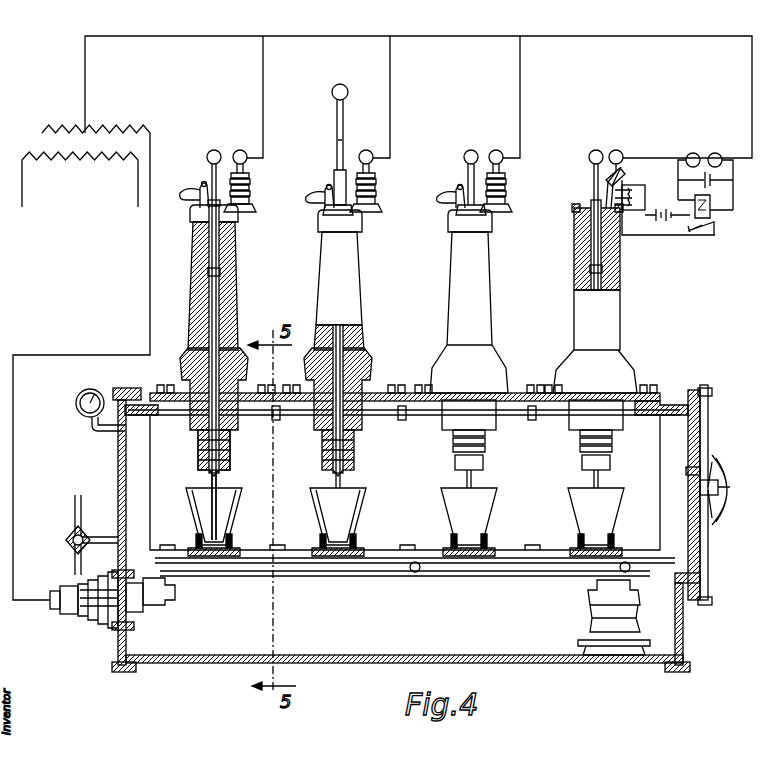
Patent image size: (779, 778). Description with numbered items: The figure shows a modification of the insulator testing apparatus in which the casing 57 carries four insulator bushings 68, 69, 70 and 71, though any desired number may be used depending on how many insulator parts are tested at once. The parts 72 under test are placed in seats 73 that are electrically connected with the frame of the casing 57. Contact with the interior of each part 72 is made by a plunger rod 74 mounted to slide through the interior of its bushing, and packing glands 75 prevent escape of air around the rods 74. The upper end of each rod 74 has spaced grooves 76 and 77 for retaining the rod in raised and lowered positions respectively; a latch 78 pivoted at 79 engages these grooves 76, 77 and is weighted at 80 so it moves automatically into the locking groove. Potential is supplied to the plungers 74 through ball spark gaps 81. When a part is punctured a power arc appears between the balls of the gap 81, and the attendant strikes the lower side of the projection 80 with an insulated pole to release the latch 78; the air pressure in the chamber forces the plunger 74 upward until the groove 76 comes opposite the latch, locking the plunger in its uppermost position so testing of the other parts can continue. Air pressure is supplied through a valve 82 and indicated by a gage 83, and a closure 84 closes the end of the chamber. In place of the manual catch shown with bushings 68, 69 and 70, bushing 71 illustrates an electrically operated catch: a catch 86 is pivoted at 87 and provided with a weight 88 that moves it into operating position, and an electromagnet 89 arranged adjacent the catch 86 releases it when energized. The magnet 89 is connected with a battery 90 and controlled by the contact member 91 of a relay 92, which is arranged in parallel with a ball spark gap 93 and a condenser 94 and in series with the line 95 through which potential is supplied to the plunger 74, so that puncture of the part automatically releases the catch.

The casing 57 is at (668, 400).
The insulator bushing 68 is at (233, 312).
The insulator bushing 69 is at (357, 314).
The insulator bushing 70 is at (486, 316).
The insulator bushing 71 is at (615, 330).
The insulator parts 72 is at (228, 518).
The seats 73 is at (192, 545).
The plunger rods 74 is at (210, 482).
The packing glands 75 is at (230, 466).
The groove 76 is at (222, 272).
The groove 77 is at (248, 185).
The latch 78 is at (183, 194).
The pivot 79 is at (200, 182).
The weight 80 is at (325, 190).
The ball spark gaps 81 is at (239, 150).
The valve 82 is at (66, 542).
The gage 83 is at (77, 398).
The closure 84 is at (692, 532).
The catch 86 is at (591, 198).
The pivot 87 is at (606, 184).
The weight 88 is at (624, 176).
The electromagnet 89 is at (630, 212).
The battery 90 is at (674, 210).
The contact member 91 is at (712, 232).
The relay 92 is at (712, 210).
The ball spark gap 93 is at (715, 153).
The condenser 94 is at (712, 183).
The line 95 is at (752, 138).